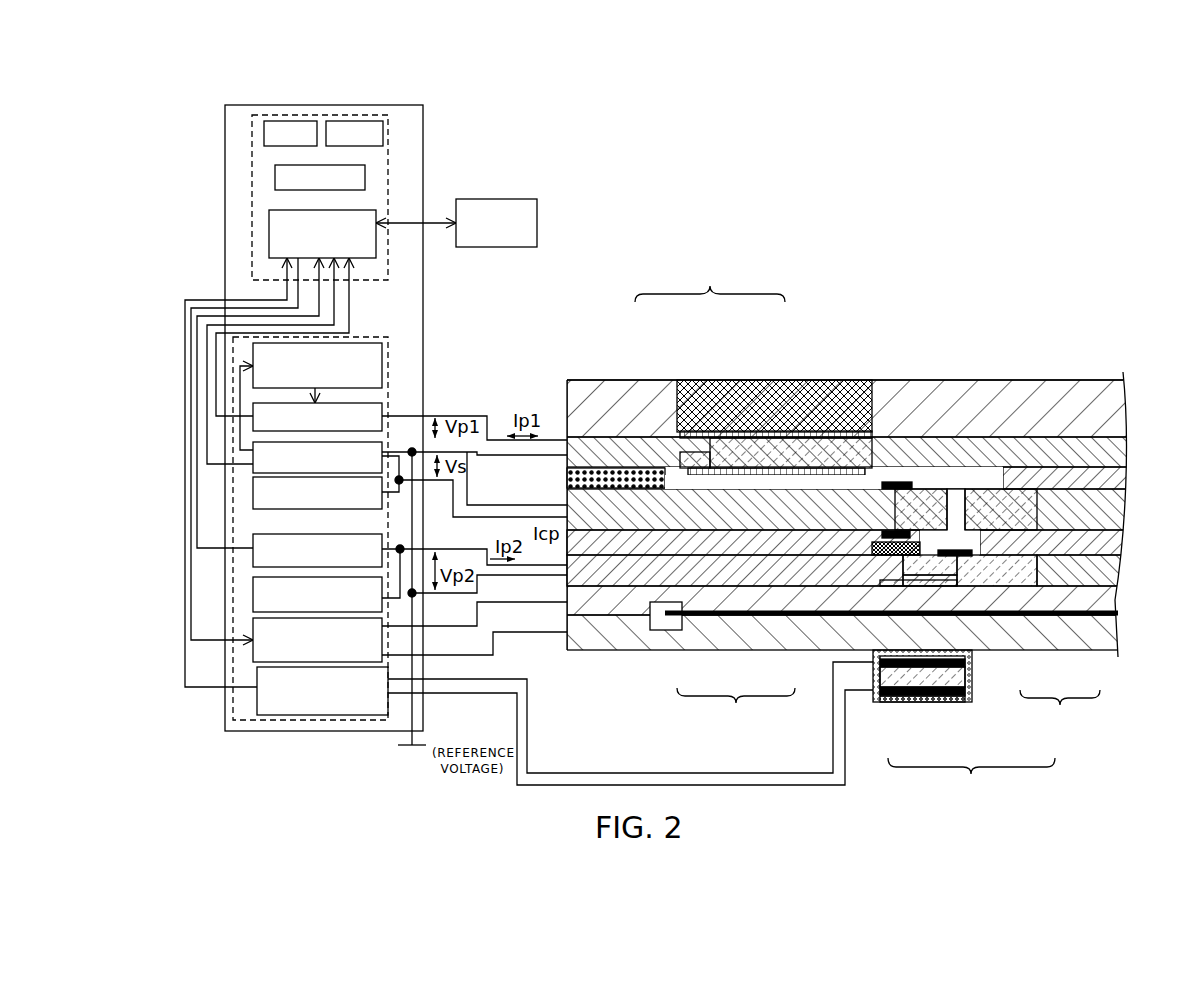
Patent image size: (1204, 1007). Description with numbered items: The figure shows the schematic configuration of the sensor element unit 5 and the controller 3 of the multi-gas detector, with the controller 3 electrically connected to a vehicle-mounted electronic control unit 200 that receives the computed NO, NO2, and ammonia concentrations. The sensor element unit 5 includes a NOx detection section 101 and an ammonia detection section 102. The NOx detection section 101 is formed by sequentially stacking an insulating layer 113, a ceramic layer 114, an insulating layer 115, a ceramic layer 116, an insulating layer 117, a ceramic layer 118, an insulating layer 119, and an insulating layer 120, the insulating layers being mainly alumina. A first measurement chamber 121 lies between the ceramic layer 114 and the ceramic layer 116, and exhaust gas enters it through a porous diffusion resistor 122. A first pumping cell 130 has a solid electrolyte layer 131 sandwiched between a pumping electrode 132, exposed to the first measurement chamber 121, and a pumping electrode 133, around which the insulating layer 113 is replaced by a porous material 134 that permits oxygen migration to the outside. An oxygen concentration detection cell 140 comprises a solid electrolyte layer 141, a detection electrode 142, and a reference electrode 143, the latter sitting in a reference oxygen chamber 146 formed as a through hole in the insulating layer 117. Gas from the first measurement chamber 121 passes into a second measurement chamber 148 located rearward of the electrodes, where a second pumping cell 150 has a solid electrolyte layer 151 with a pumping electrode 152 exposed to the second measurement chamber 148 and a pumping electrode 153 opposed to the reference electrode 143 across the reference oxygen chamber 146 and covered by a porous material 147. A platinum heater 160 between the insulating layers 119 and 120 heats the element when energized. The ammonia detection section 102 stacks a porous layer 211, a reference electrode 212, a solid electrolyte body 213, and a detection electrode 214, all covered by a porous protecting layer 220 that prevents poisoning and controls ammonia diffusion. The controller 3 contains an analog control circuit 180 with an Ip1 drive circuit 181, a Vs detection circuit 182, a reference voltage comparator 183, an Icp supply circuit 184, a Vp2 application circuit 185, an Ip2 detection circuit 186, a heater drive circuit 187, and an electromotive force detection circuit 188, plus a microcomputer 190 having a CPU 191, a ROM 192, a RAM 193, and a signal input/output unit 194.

The controller 3 is at (492, 148).
The sensor element unit 5 is at (1066, 243).
The NOx detection section 101 is at (735, 206).
The ammonia detection section 102 is at (971, 777).
The insulating layer 113 is at (1125, 414).
The ceramic layer 114 is at (1128, 448).
The insulating layer 115 is at (1125, 478).
The ceramic layer 116 is at (1118, 508).
The insulating layer 117 is at (1110, 535).
The ceramic layer 118 is at (1107, 566).
The insulating layer 119 is at (1113, 600).
The insulating layer 120 is at (1112, 628).
The first measurement chamber 121 is at (695, 482).
The diffusion resistor 122 is at (567, 478).
The first pumping cell 130 is at (710, 284).
The solid electrolyte layer 131 is at (762, 447).
The pumping electrode 132 is at (688, 471).
The pumping electrode 133 is at (716, 432).
The porous material 134 is at (812, 382).
The oxygen concentration detection cell 140 is at (736, 706).
The solid electrolyte layer 141 is at (895, 515).
The detection electrode 142 is at (883, 485).
The reference electrode 143 is at (883, 536).
The reference oxygen chamber 146 is at (916, 535).
The porous material 147 is at (875, 553).
The second measurement chamber 148 is at (977, 537).
The second pumping cell 150 is at (1060, 707).
The solid electrolyte layer 151 is at (978, 572).
The pumping electrode 152 is at (990, 584).
The pumping electrode 153 is at (956, 558).
The heater 160 is at (1118, 618).
The control circuit 180 is at (360, 337).
The Ip1 drive circuit 181 is at (382, 408).
The Vs detection circuit 182 is at (382, 448).
The reference voltage comparator 183 is at (382, 355).
The Icp supply circuit 184 is at (382, 502).
The Vp2 application circuit 185 is at (253, 596).
The Ip2 detection circuit 186 is at (382, 541).
The heater drive circuit 187 is at (253, 631).
The electromotive force detection circuit 188 is at (257, 681).
The microcomputer 190 is at (360, 115).
The CPU 191 is at (365, 177).
The ROM 192 is at (264, 133).
The RAM 193 is at (383, 133).
The signal input/output unit 194 is at (269, 235).
The electronic control unit 200 is at (537, 223).
The porous layer 211 is at (975, 657).
The reference electrode 212 is at (970, 667).
The solid electrolyte body 213 is at (966, 694).
The detection electrode 214 is at (931, 702).
The protecting layer 220 is at (882, 702).